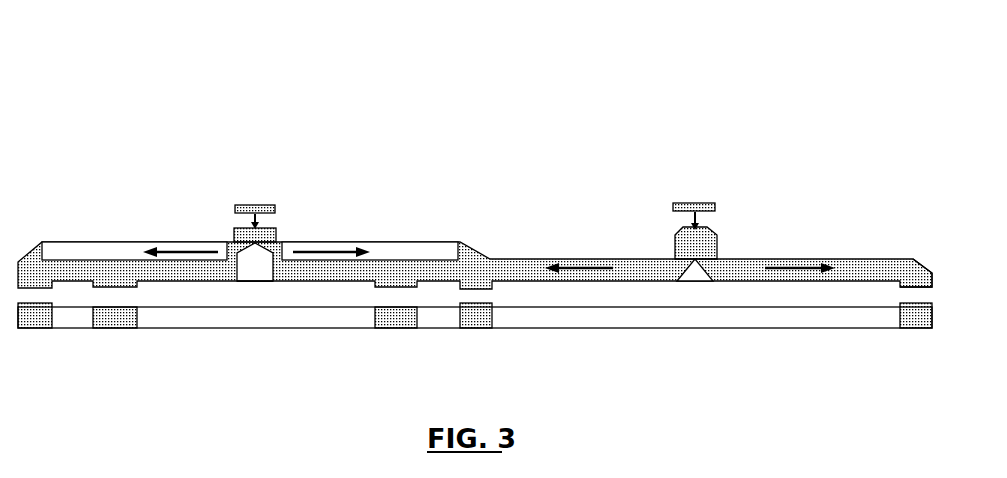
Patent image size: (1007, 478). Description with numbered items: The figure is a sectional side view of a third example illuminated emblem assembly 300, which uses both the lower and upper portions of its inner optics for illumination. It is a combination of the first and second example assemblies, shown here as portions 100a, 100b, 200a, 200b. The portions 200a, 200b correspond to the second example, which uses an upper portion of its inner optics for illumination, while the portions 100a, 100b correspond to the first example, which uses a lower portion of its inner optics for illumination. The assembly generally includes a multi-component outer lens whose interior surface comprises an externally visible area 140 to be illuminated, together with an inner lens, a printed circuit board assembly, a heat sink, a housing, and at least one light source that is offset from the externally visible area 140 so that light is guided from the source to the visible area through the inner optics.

The third example illuminated emblem assembly 300 is at (197, 43).
The first portion of second example assembly 200a is at (122, 187).
The second portion of second example assembly 200b is at (367, 187).
The first portion of first example assembly 100a is at (603, 187).
The second portion of first example assembly 100b is at (802, 188).
The externally visible area 140 is at (37, 270).